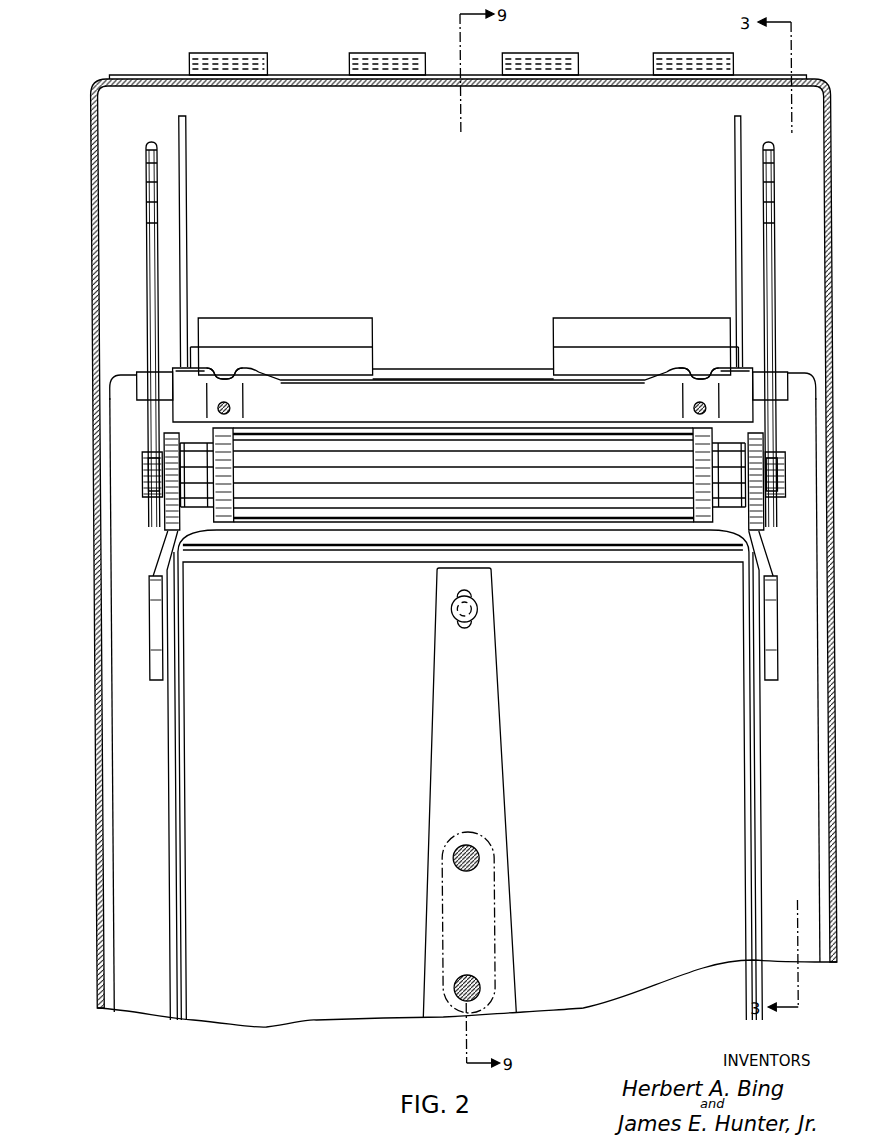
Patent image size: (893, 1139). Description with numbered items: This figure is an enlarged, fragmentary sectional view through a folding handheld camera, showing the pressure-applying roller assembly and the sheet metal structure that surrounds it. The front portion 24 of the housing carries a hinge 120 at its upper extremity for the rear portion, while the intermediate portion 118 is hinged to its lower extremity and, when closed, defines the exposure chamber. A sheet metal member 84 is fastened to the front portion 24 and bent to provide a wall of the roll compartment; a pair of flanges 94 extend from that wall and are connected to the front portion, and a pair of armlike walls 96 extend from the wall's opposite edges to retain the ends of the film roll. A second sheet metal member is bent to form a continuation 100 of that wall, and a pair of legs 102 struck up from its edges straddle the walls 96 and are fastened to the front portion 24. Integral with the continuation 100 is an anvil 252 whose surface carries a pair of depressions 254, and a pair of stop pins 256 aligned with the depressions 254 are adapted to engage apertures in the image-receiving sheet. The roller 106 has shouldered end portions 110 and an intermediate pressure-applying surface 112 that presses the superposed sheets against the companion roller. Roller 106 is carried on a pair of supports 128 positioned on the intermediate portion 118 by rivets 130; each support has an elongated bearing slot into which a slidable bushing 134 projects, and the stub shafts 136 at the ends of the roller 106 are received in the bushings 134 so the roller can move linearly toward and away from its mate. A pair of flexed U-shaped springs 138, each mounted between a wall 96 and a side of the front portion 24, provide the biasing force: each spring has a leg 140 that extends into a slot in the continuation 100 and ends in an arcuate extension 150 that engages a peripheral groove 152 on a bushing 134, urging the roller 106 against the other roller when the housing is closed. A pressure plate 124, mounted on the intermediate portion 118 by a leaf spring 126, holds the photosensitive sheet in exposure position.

The front portion 24 is at (836, 299).
The hinge 120 is at (256, 53).
The armlike walls 96 is at (190, 177).
The U-shaped springs 138 is at (142, 236).
The spring leg 140 is at (149, 268).
The legs 102 is at (138, 385).
The peripheral grooves 152 is at (153, 455).
The intermediate portion 118 is at (152, 808).
The flanges 94 is at (305, 325).
The sheet metal member 84 is at (414, 366).
The continuation 100 is at (478, 380).
The anvil 252 is at (408, 408).
The depressions 254 is at (229, 385).
The stop pins 256 is at (231, 407).
The roller 106 is at (573, 440).
The pressure-applying surface 112 is at (464, 485).
The arcuate extensions 150 is at (153, 502).
The slidable bushing 134 is at (143, 457).
The stub shafts 136 is at (143, 470).
The shouldered end portions 110 is at (223, 522).
The pressure plate 124 is at (566, 658).
The supports 128 is at (143, 580).
The rivets 130 is at (149, 598).
The leaf spring 126 is at (502, 715).